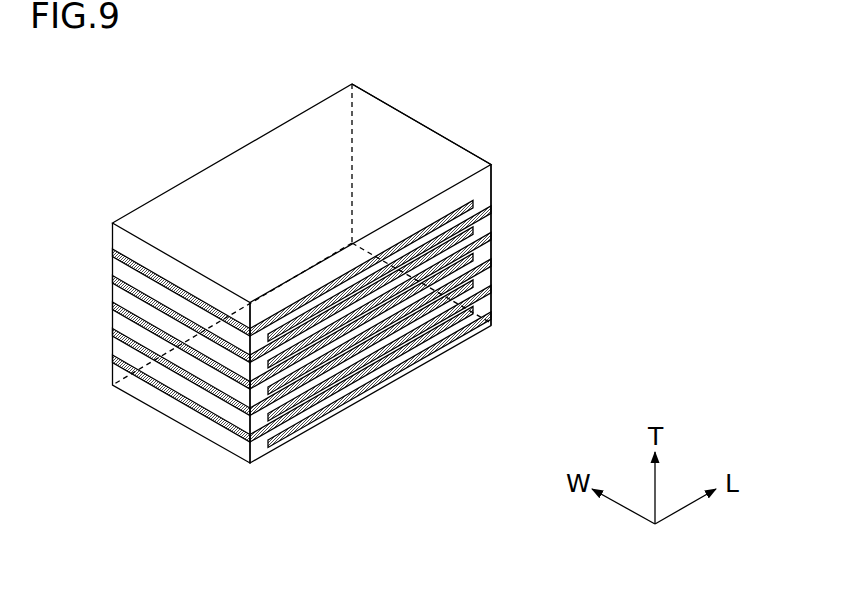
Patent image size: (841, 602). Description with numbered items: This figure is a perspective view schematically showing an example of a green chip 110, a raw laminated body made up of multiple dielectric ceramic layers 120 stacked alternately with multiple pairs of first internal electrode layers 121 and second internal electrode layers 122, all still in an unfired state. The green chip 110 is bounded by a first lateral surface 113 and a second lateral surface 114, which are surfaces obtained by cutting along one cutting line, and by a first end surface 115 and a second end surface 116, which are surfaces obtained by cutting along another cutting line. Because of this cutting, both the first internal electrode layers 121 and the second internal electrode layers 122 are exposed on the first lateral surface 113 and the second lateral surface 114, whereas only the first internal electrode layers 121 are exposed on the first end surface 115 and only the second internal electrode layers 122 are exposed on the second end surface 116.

The green chip 110 is at (97, 106).
The first lateral surface 113 is at (222, 191).
The second lateral surface 114 is at (415, 352).
The first end surface 115 is at (173, 378).
The second end surface 116 is at (405, 148).
The dielectric ceramic layers 120 is at (347, 362).
The first internal electrode layers 121 is at (127, 290).
The second internal electrode layers 122 is at (483, 240).